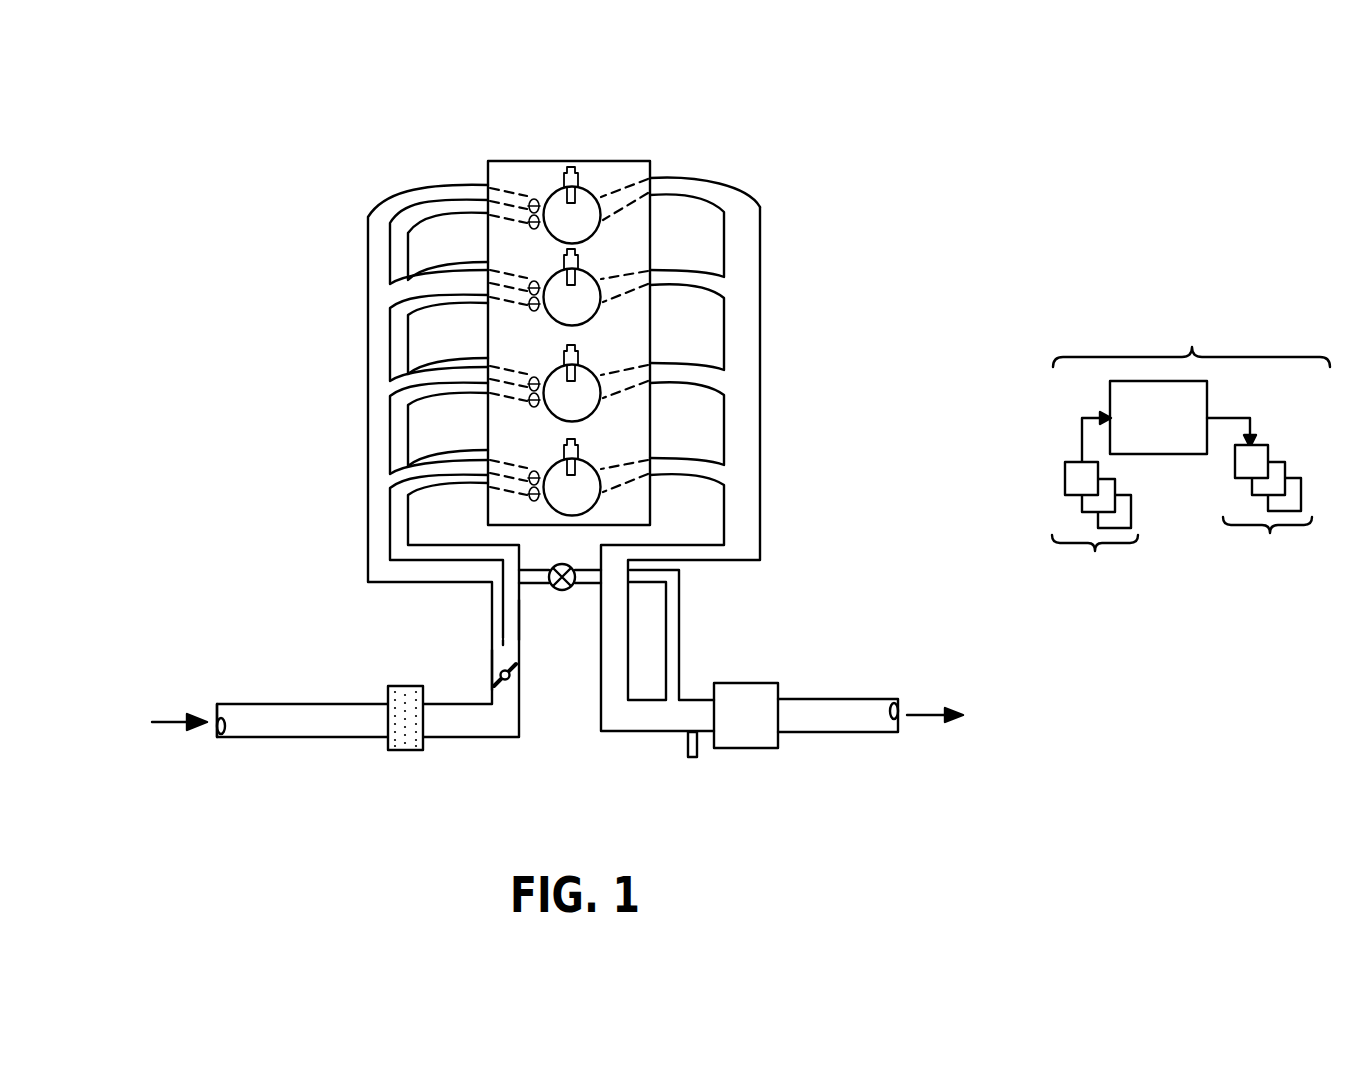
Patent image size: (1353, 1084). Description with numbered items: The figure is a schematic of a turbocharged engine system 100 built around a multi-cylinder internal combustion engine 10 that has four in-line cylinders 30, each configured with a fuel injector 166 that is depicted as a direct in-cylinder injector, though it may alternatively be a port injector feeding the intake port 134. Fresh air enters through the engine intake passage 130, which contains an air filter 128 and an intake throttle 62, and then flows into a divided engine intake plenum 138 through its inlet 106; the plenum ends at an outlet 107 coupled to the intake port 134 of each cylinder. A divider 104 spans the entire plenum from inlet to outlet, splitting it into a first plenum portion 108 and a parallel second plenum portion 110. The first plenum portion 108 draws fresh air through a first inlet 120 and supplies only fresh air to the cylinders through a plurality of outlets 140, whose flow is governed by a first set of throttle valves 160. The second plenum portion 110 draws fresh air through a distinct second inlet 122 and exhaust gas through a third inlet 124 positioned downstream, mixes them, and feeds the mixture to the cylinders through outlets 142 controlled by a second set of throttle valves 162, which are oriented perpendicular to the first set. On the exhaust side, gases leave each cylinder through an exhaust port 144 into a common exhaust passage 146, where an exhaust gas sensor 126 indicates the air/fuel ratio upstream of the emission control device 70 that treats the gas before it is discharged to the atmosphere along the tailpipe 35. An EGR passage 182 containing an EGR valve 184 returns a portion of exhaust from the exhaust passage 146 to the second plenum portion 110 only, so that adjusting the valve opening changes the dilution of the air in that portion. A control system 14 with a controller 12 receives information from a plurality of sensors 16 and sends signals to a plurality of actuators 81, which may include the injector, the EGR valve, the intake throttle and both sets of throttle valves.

The turbocharged engine system 100 is at (938, 156).
The internal combustion engine 10 is at (599, 139).
The cylinder 30 is at (582, 222).
The fuel injector 166 is at (571, 168).
The first set of throttle valves 160 is at (490, 170).
The intake port 134 is at (529, 304).
The second set of throttle valves 162 is at (527, 404).
The outlet 107 is at (531, 186).
The divider 104 is at (397, 563).
The divided engine intake plenum 138 is at (306, 502).
The second plenum portion 110 is at (397, 526).
The outlets of first plenum portion 140 is at (513, 278).
The outlets of second plenum portion 142 is at (508, 394).
The first plenum portion 108 is at (375, 571).
The first inlet 120 is at (502, 630).
The second inlet 122 is at (516, 631).
The third inlet 124 is at (516, 575).
The inlet 106 is at (504, 653).
The intake throttle 62 is at (519, 677).
The EGR valve 184 is at (554, 565).
The exhaust port 144 is at (689, 180).
The exhaust passage 146 is at (762, 386).
The EGR passage 182 is at (680, 624).
The emission control device 70 is at (746, 715).
The tailpipe 35 is at (853, 698).
The exhaust gas sensor 126 is at (693, 758).
The engine intake passage 130 is at (257, 738).
The air filter 128 is at (400, 751).
The control system 14 is at (1191, 447).
The controller 12 is at (1169, 422).
The sensors 16 is at (1095, 528).
The actuators 81 is at (1267, 511).